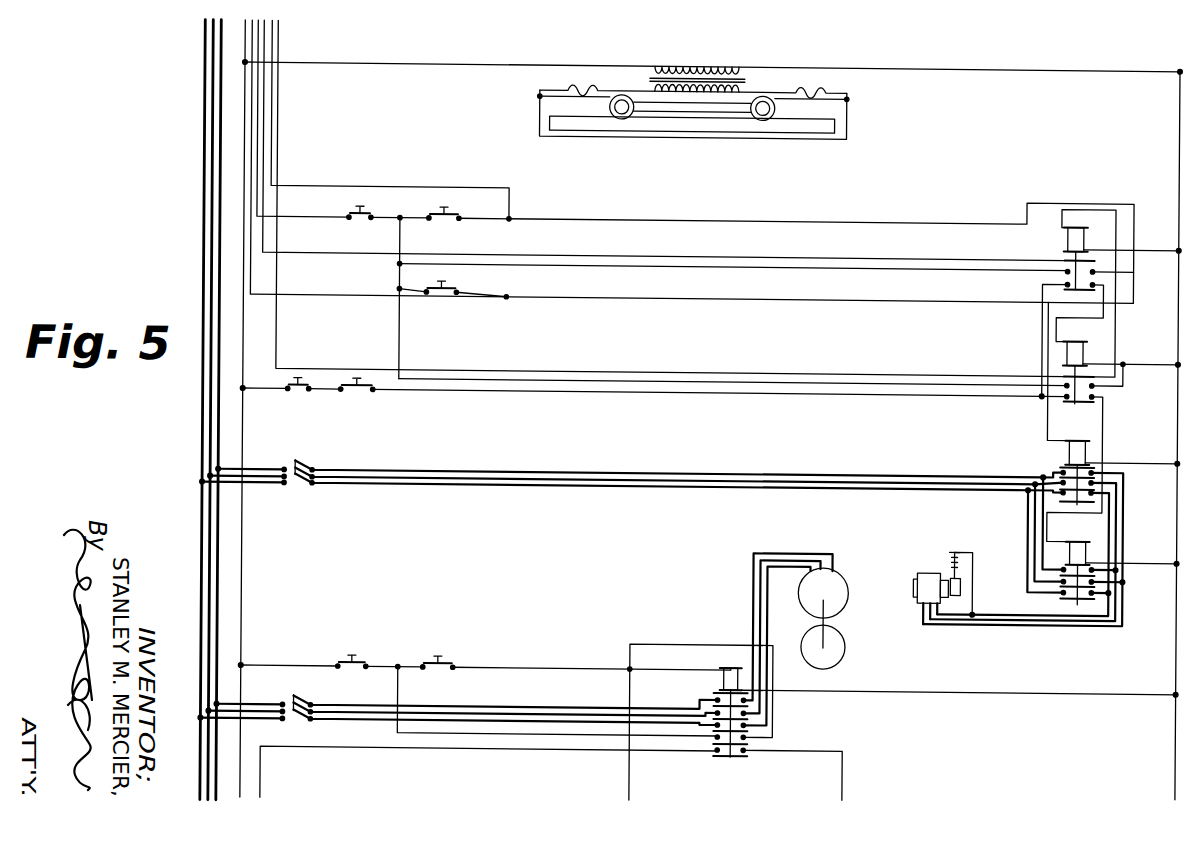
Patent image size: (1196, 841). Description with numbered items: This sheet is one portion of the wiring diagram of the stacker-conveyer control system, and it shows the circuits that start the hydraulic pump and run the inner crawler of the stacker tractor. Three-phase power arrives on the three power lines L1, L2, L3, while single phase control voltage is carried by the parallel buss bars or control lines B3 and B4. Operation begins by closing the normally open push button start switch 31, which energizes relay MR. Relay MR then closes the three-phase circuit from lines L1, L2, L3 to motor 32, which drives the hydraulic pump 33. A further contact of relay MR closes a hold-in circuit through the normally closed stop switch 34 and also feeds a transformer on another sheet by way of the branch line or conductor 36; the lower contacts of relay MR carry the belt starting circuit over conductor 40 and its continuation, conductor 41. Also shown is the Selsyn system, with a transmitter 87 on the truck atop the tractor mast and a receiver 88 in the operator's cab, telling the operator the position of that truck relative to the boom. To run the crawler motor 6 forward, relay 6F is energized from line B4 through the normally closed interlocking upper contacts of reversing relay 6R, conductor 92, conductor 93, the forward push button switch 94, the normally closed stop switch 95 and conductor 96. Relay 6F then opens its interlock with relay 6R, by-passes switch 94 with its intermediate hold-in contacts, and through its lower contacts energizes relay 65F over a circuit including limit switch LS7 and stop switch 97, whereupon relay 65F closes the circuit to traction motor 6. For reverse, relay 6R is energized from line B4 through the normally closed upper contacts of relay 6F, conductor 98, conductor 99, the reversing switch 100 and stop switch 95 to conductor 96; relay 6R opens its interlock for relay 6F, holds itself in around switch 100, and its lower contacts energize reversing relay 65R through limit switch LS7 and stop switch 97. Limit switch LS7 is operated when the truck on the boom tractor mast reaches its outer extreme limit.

The power line L1 is at (205, 104).
The power line L2 is at (213, 128).
The power line L3 is at (221, 151).
The control line B3 is at (245, 176).
The control line B4 is at (1180, 93).
The conductor 99 is at (252, 38).
The conductor 92 is at (278, 52).
The conductor 98 is at (264, 91).
The conductor 93 is at (272, 114).
The conductor 96 is at (258, 151).
The Selsyn transmitter 87 is at (620, 116).
The Selsyn receiver 88 is at (767, 116).
The stop switch 95 is at (364, 208).
The forward push button switch 94 is at (449, 207).
The reversing switch 100 is at (452, 281).
The stop switch 97 is at (300, 394).
The limit switch LS7 is at (356, 397).
The relay 6F is at (1112, 303).
The reversing relay 6R is at (1114, 432).
The relay 65F is at (1051, 524).
The reversing relay 65R is at (1119, 564).
The crawler motor 6 is at (934, 573).
The motor 32 is at (843, 591).
The hydraulic pump 33 is at (842, 644).
The stop switch 34 is at (362, 661).
The push button start switch 31 is at (450, 656).
The relay MR is at (945, 705).
The branch line 36 is at (634, 777).
The conductor 40 is at (848, 786).
The conductor 41 is at (428, 747).